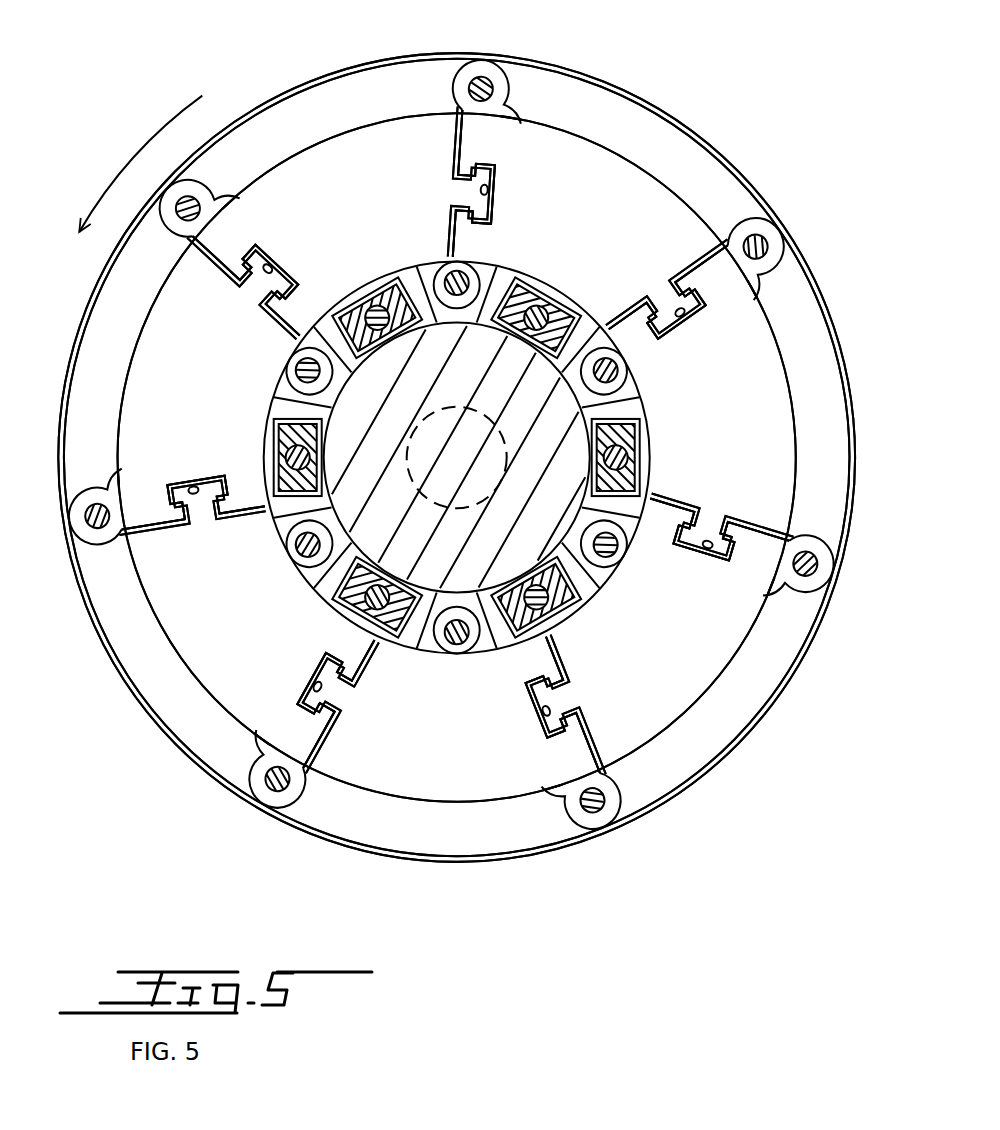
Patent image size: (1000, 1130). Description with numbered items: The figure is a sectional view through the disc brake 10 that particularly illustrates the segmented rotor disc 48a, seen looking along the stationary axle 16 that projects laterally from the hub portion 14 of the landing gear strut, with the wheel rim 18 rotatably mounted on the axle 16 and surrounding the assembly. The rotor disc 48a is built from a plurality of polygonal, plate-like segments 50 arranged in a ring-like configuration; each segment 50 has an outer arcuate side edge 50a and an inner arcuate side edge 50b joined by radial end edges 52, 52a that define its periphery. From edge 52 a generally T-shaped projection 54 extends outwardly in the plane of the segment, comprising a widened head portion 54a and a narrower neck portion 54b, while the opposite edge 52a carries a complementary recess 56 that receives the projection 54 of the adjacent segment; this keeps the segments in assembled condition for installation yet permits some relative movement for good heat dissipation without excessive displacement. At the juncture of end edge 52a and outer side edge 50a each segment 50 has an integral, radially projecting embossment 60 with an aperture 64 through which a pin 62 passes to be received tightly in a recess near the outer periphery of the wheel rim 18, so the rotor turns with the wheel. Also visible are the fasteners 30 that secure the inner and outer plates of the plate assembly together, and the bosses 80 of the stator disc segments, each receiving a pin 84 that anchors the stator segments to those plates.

The disc brake 10 is at (745, 160).
The hub portion 14 is at (578, 330).
The stationary axle 16 is at (500, 430).
The wheel rim 18 is at (718, 760).
The fasteners 30 is at (380, 285).
The segmented rotor disc 48a is at (712, 697).
The segment 50 is at (386, 130).
The outer arcuate side edge 50a is at (662, 132).
The inner arcuate side edge 50b is at (470, 332).
The radial end edge 52 is at (230, 266).
The radial end edge 52a is at (216, 255).
The projection 54 is at (492, 178).
The widened head portion 54a is at (492, 212).
The narrower neck portion 54b is at (462, 175).
The recess 56 is at (486, 198).
The embossment 60 is at (462, 72).
The pin 62 is at (488, 76).
The aperture 64 is at (100, 505).
The boss 80 is at (448, 312).
The pin 84 is at (448, 280).